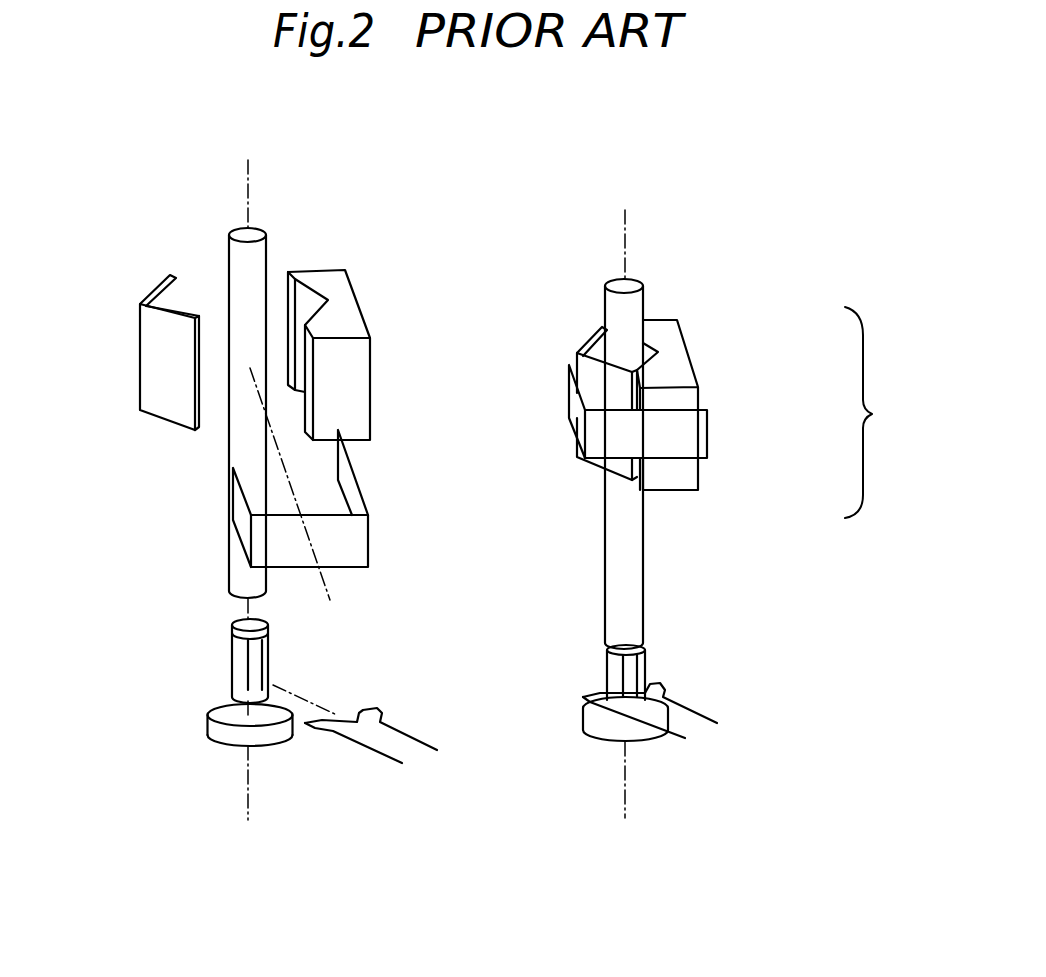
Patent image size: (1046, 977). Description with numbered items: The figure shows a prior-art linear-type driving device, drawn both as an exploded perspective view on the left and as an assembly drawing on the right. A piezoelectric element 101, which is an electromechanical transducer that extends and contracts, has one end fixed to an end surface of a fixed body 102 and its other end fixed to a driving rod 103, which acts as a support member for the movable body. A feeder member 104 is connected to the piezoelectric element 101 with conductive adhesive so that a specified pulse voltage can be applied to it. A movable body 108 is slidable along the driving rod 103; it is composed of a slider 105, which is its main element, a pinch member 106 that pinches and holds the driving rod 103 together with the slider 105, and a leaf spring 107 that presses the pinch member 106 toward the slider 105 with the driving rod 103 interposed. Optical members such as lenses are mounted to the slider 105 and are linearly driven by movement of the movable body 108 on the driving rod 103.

The piezoelectric element 101 is at (238, 660).
The fixed body 102 is at (225, 732).
The driving rod 103 is at (236, 268).
The feeder member 104 is at (377, 740).
The slider 105 is at (321, 280).
The pinch member 106 is at (152, 353).
The leaf spring 107 is at (345, 550).
The movable body 108 is at (746, 510).